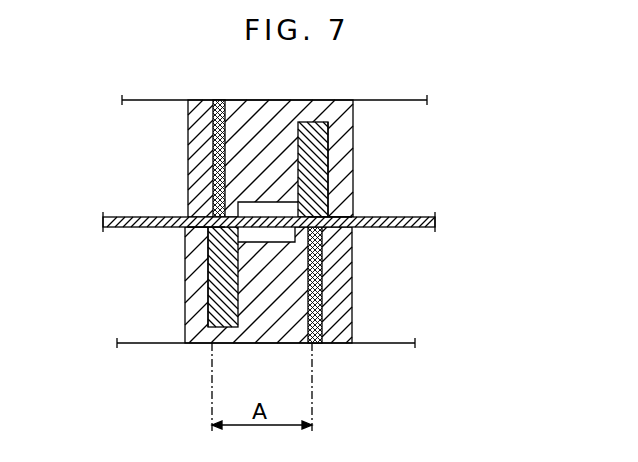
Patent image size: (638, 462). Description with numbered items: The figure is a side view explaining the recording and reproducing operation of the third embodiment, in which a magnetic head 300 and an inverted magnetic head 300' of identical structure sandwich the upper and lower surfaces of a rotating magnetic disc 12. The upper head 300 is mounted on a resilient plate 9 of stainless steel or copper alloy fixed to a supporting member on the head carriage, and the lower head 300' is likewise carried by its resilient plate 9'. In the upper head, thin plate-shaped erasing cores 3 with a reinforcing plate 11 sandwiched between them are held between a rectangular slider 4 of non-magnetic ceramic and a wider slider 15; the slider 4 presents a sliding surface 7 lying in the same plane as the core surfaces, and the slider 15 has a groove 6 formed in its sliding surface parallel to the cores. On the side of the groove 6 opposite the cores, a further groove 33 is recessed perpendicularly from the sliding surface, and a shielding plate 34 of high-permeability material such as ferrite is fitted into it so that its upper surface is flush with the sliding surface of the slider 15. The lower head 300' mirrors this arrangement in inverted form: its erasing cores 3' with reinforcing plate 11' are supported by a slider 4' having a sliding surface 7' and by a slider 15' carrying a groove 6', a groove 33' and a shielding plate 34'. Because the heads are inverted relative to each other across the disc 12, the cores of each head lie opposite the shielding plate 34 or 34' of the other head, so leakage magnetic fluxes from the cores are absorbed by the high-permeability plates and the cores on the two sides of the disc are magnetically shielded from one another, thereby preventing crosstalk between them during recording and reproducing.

The magnetic head 300 is at (232, 158).
The inverted magnetic head 300' is at (307, 285).
The erasing core 3 is at (205, 139).
The erasing core 3' is at (328, 306).
The slider 4 is at (179, 142).
The slider 4' is at (353, 306).
The groove 6 is at (315, 187).
The groove 6' is at (216, 257).
The sliding surface 7 is at (184, 244).
The sliding surface 7' is at (349, 204).
The resilient plate 9 is at (274, 83).
The resilient plate 9' is at (270, 361).
The reinforcing plate 11 is at (231, 139).
The reinforcing plate 11' is at (299, 310).
The magnetic disc 12 is at (153, 216).
The slider 15 is at (289, 139).
The slider 15' is at (246, 307).
The groove 33 is at (365, 169).
The groove 33' is at (167, 277).
The shielding plate 34 is at (322, 139).
The shielding plate 34' is at (191, 308).